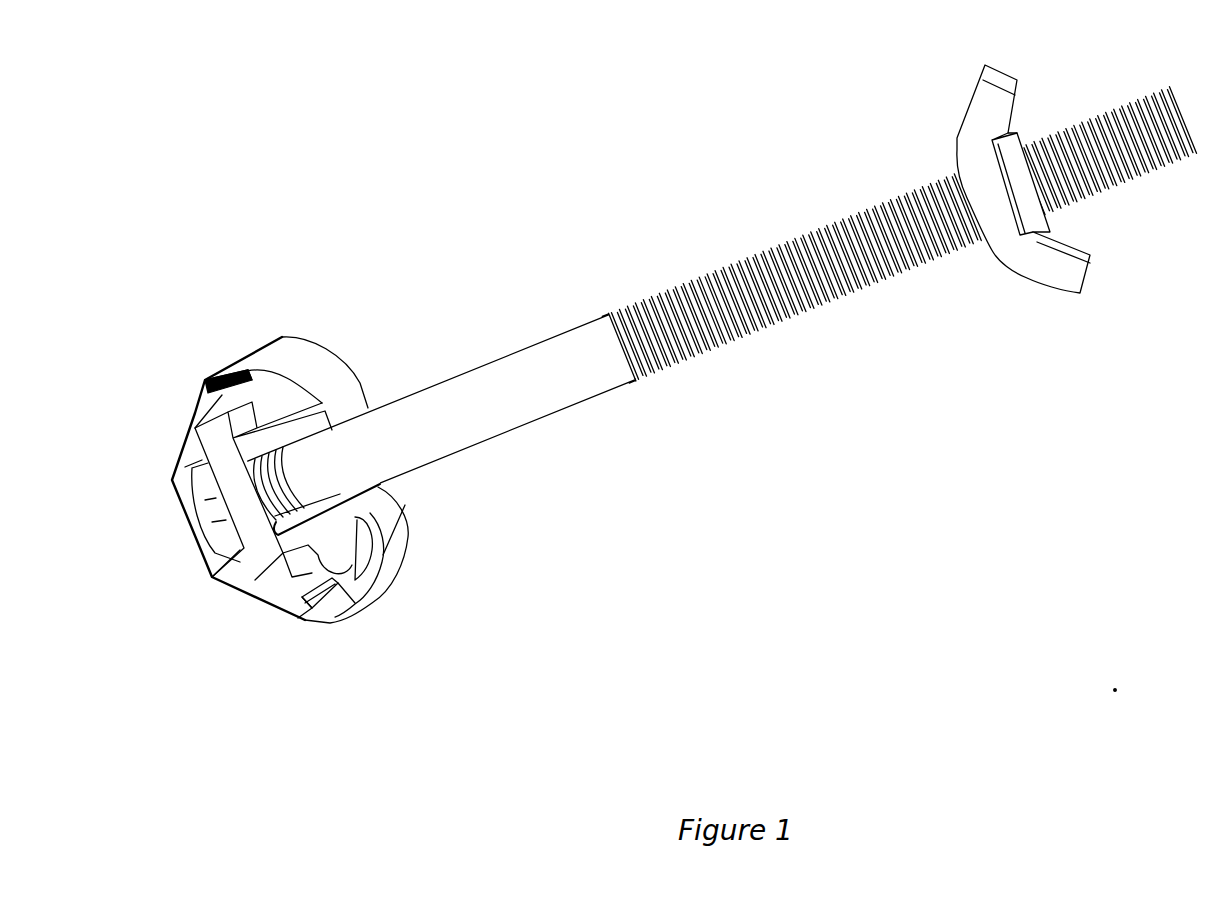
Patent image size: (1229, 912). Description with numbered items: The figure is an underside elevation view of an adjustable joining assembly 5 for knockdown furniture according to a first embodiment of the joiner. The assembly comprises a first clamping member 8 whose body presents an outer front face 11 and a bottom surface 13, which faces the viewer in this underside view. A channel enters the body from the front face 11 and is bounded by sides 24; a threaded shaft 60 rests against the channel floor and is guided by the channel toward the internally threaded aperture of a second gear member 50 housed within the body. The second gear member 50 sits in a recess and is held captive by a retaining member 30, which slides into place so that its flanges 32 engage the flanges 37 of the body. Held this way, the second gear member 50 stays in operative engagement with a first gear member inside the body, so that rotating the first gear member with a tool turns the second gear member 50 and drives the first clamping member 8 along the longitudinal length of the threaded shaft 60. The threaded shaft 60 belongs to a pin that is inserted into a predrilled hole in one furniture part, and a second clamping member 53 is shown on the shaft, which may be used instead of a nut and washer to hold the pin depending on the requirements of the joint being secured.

The adjustable joining assembly 5 is at (629, 387).
The first clamping member 8 is at (303, 455).
The outer front face 11 is at (358, 407).
The bottom surface 13 is at (372, 562).
The sides 24 is at (390, 497).
The retaining member 30 is at (232, 582).
The flanges 32 is at (327, 617).
The flanges 37 is at (200, 392).
The second gear member 50 is at (213, 503).
The second clamping member 53 is at (1055, 268).
The threaded shaft 60 is at (598, 373).